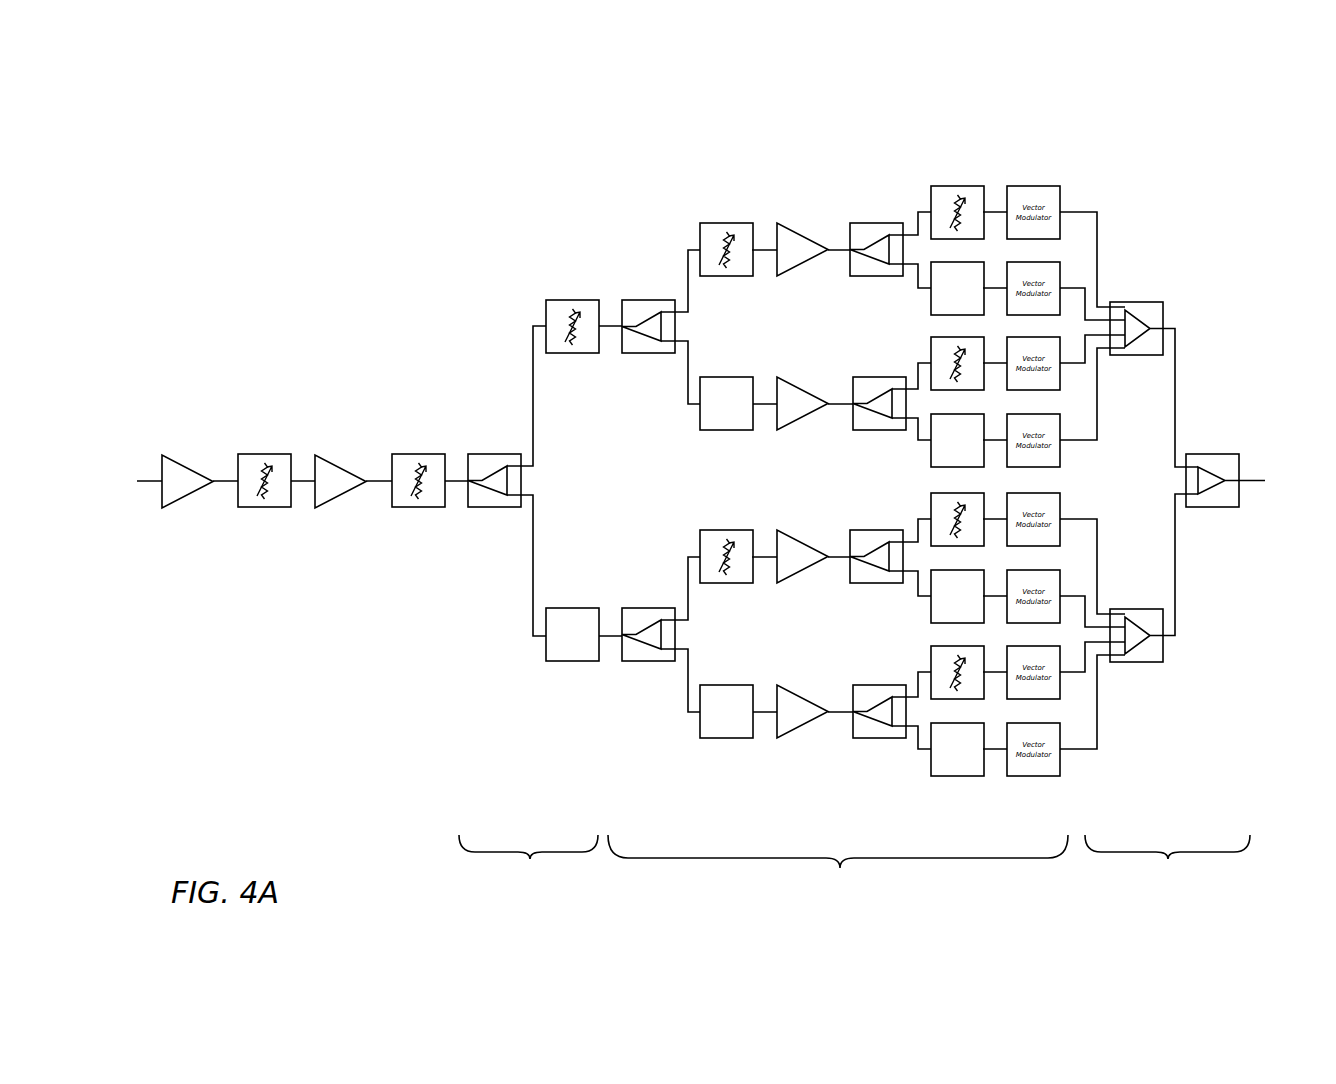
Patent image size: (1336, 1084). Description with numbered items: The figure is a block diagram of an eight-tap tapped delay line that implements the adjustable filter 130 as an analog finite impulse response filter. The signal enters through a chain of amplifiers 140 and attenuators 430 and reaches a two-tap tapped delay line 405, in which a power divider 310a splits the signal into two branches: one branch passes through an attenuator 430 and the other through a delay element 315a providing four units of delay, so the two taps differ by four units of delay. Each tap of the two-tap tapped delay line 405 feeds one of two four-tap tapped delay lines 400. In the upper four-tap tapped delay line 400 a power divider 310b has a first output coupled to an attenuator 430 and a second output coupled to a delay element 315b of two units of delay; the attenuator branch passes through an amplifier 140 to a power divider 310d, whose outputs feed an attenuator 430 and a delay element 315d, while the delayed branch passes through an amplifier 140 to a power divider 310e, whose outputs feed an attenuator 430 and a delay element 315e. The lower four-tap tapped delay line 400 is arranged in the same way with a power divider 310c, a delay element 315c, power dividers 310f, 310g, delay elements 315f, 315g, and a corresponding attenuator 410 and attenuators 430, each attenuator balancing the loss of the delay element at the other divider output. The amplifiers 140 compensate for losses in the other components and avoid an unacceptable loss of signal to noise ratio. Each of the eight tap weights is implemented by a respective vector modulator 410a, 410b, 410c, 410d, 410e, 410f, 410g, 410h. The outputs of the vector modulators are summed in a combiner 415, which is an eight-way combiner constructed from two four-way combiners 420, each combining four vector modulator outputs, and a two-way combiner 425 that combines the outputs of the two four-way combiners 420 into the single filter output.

The adjustable filter 130 is at (537, 198).
The amplifier 140 is at (183, 497).
The attenuator 430 is at (265, 453).
The vector modulator 410 is at (745, 530).
The power divider 310a is at (492, 508).
The power divider 310b is at (650, 354).
The power divider 310c is at (648, 662).
The power divider 310d is at (860, 277).
The power divider 310e is at (862, 431).
The power divider 310f is at (862, 584).
The power divider 310g is at (860, 739).
The delay element 315a is at (573, 662).
The delay element 315b is at (723, 431).
The delay element 315c is at (723, 739).
The delay element 315d is at (972, 326).
The delay element 315e is at (972, 478).
The delay element 315f is at (972, 634).
The delay element 315g is at (950, 777).
The vector modulator 410a is at (1033, 185).
The vector modulator 410b is at (1052, 326).
The vector modulator 410c is at (1052, 401).
The vector modulator 410d is at (1052, 478).
The vector modulator 410e is at (1052, 557).
The vector modulator 410f is at (1052, 634).
The vector modulator 410g is at (1052, 710).
The vector modulator 410h is at (1033, 777).
The four-way combiner 420 is at (1143, 301).
The two-way combiner 425 is at (1215, 508).
The 2-tap tapped delay line 405 is at (528, 869).
The 4-tap tapped delay line 400 is at (838, 875).
The combiner 415 is at (1167, 869).